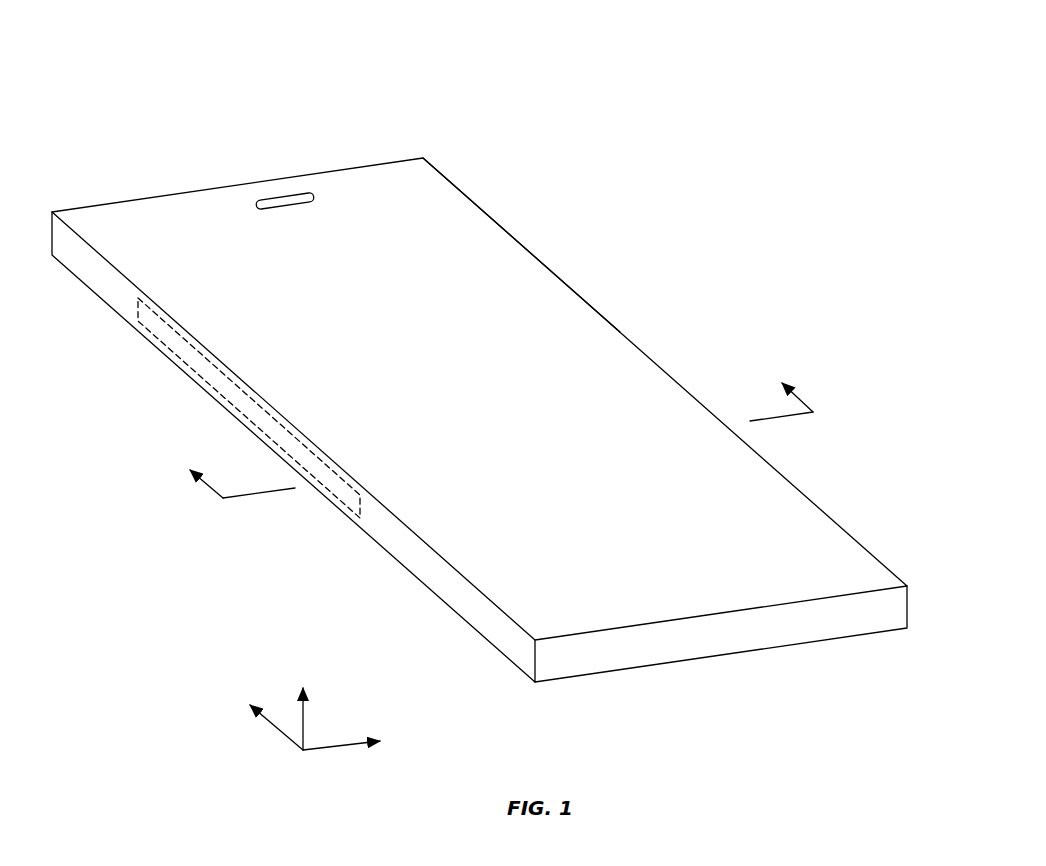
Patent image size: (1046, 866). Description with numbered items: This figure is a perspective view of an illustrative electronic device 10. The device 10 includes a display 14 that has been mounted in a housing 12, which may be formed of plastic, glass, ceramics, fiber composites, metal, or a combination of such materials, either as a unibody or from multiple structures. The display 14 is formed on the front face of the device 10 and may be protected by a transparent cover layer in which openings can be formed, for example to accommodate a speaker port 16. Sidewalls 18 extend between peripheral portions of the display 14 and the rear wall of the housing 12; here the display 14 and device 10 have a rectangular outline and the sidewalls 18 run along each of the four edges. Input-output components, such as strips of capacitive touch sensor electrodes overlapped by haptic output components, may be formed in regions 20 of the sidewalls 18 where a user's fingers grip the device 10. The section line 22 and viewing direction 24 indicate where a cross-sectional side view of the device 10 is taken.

The electronic device 10 is at (643, 101).
The housing 12 is at (908, 606).
The display 14 is at (542, 307).
The speaker port opening 16 is at (283, 197).
The sidewalls 18 is at (112, 290).
The regions 20 is at (504, 214).
The line 22 is at (262, 494).
The direction 24 is at (212, 492).